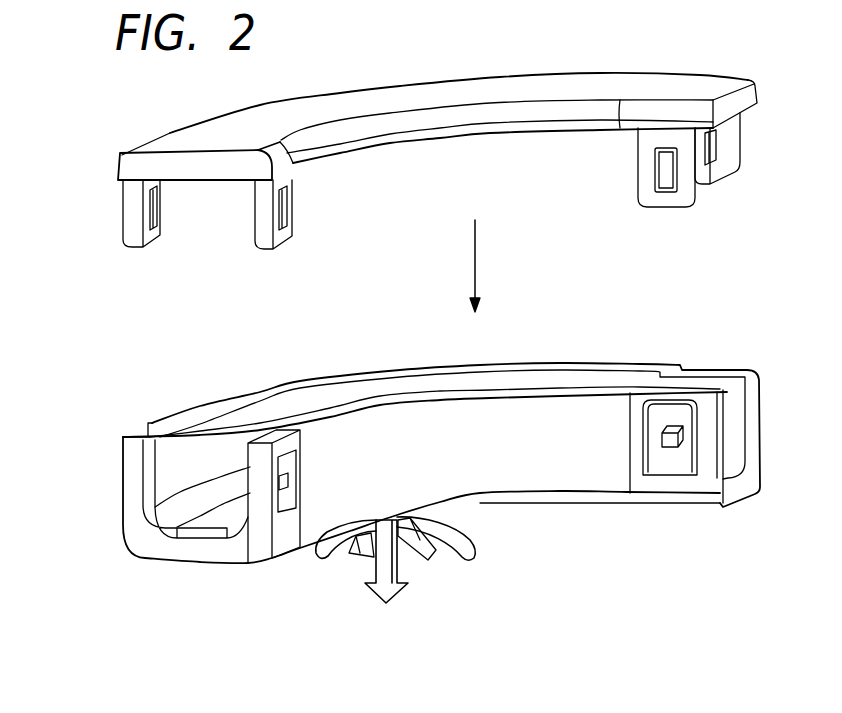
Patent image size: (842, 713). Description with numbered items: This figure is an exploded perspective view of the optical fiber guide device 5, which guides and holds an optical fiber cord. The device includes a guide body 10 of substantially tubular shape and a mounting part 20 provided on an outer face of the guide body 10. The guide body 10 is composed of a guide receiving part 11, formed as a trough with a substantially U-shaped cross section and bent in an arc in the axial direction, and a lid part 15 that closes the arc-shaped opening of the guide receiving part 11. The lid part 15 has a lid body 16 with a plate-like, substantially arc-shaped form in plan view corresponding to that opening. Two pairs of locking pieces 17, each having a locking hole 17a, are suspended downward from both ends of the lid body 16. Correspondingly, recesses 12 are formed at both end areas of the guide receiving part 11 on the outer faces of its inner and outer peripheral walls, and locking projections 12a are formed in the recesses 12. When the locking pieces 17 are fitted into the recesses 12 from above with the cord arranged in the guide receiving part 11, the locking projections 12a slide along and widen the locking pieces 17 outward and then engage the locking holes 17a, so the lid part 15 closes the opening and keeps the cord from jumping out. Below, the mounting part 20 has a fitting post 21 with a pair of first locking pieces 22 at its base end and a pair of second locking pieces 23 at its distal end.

The optical fiber guide device 5 is at (32, 268).
The guide body 10 is at (58, 125).
The guide receiving part 11 is at (124, 457).
The recess 12 is at (297, 450).
The locking projection 12a is at (290, 483).
The lid part 15 is at (165, 127).
The lid body 16 is at (436, 93).
The locking piece 17 is at (150, 250).
The locking hole 17a is at (148, 212).
The mounting part 20 is at (337, 578).
The fitting post 21 is at (383, 595).
The first locking piece 22 is at (312, 556).
The second locking piece 23 is at (358, 565).